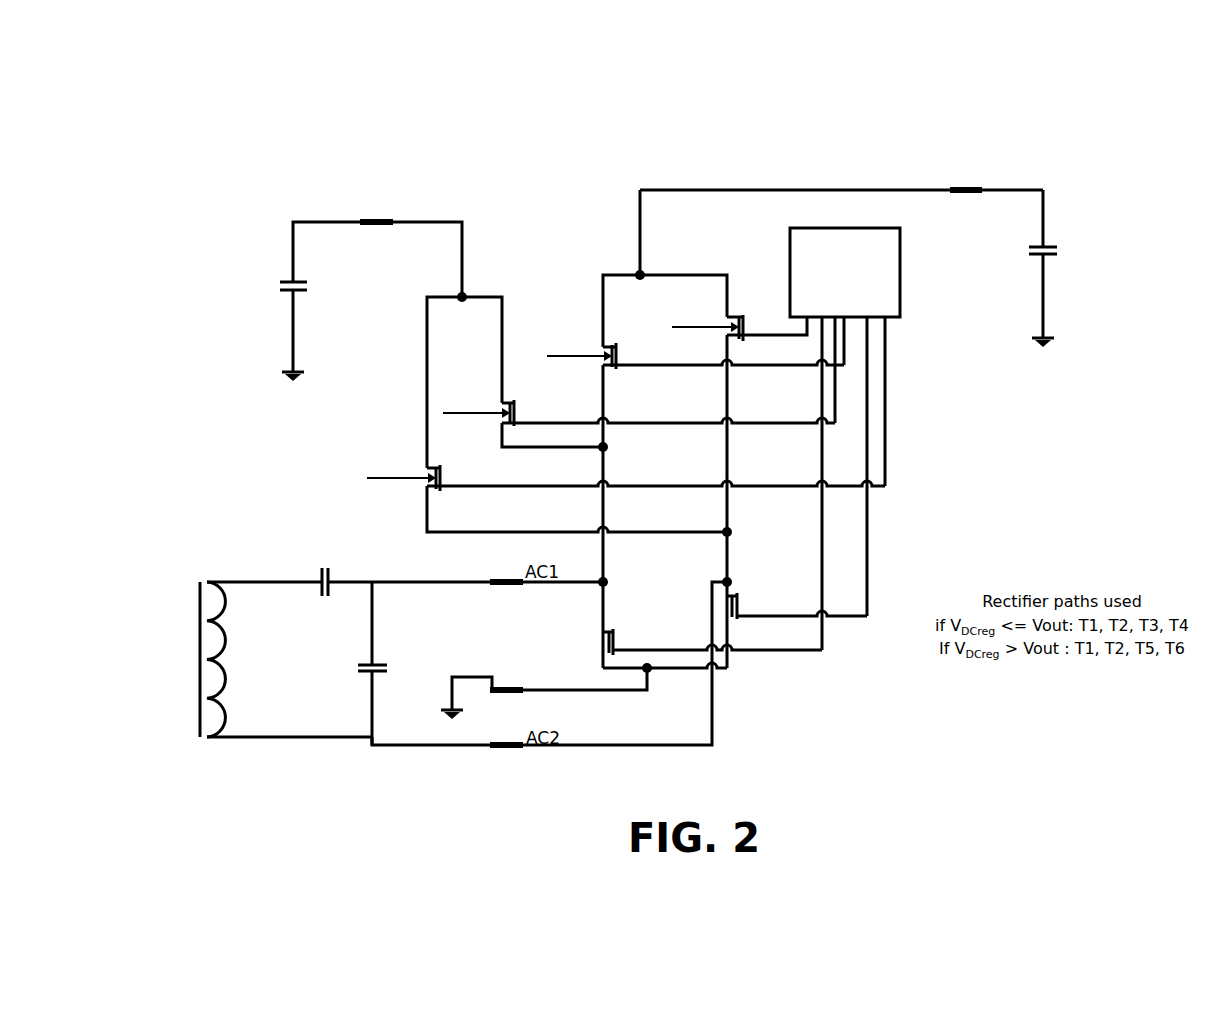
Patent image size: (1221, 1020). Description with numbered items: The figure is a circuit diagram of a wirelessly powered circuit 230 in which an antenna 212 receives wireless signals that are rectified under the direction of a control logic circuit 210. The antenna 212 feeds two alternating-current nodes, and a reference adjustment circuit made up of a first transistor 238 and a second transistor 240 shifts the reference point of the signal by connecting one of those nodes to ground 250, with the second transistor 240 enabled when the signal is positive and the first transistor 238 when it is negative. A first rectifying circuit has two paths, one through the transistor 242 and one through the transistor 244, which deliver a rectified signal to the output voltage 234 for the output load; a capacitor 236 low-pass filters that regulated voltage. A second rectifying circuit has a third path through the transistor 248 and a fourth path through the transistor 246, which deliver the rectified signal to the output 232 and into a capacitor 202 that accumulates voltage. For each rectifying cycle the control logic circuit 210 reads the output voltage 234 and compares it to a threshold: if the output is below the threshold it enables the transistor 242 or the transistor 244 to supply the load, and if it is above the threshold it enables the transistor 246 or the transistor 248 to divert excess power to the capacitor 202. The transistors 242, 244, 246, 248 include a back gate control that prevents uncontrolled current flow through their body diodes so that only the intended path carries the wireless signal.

The capacitor 202 is at (242, 303).
The control logic circuit 210 is at (908, 263).
The antenna 212 is at (200, 740).
The wirelessly powered circuit 230 is at (896, 104).
The output of the second rectifying circuit 232 is at (375, 187).
The output voltage 234 is at (990, 158).
The capacitor 236 is at (992, 270).
The first transistor 238 is at (590, 625).
The second transistor 240 is at (752, 583).
The first transistor 242 is at (632, 350).
The second transistor 244 is at (752, 275).
The fourth transistor 246 is at (444, 463).
The third transistor 248 is at (510, 397).
The ground 250 is at (533, 672).